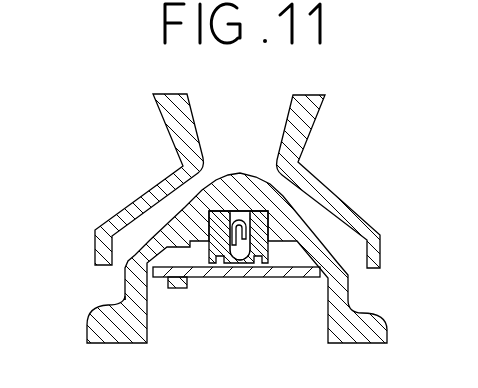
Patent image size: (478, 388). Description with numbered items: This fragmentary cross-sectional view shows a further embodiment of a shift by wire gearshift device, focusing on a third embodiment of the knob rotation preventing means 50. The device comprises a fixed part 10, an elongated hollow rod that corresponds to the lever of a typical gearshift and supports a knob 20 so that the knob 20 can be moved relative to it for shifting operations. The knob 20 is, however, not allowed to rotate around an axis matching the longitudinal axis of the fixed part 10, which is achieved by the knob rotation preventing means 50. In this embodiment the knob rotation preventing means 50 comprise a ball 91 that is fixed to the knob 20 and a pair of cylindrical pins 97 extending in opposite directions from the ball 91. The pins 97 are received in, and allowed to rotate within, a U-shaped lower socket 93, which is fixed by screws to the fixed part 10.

The fixed part 10 is at (87, 326).
The knob 20 is at (151, 117).
The knob rotation preventing means 50 is at (288, 195).
The ball 91 is at (241, 203).
The U-shaped lower socket 93 is at (209, 232).
The cylindrical pins 97 is at (268, 223).